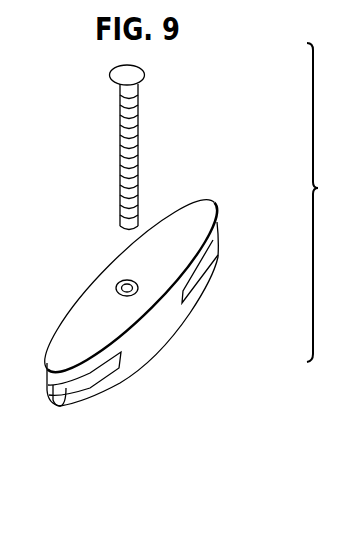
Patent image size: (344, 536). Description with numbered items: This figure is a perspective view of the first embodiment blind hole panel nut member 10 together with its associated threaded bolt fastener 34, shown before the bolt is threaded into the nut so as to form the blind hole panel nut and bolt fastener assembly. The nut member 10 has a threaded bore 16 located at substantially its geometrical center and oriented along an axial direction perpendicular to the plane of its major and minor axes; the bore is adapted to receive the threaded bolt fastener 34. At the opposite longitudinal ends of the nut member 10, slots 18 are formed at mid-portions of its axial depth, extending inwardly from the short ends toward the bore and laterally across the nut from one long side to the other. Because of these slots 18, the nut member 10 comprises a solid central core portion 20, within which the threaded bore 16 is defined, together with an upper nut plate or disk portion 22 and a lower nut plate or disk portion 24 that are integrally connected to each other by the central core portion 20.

The nut member 10 is at (156, 292).
The threaded bore 16 is at (116, 286).
The slots 18 is at (215, 261).
The central core portion 20 is at (162, 323).
The upper nut plate or disk portion 22 is at (165, 273).
The lower nut plate or disk portion 24 is at (108, 389).
The threaded bolt fastener 34 is at (139, 158).